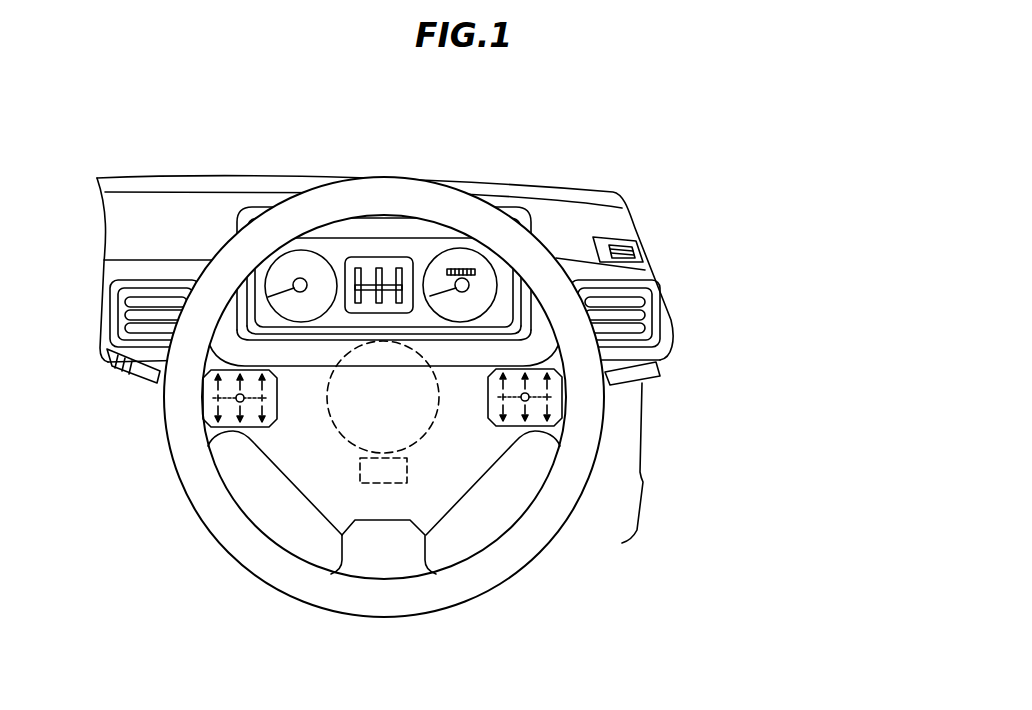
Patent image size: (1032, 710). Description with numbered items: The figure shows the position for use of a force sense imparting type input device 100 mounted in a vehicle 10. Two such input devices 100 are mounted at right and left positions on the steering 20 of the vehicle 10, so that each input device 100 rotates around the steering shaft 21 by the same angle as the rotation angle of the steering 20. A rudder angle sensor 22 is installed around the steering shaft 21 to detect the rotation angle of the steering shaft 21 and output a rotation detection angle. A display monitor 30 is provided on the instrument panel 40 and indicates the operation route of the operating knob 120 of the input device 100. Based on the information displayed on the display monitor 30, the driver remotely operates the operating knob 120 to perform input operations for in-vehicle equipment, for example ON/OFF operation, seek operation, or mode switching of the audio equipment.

The vehicle 10 is at (480, 409).
The steering 20 is at (487, 440).
The steering shaft 21 is at (408, 450).
The rudder angle sensor 22 is at (368, 484).
The display monitor 30 is at (338, 231).
The instrument panel 40 is at (449, 329).
The force sense imparting type input device 100 is at (487, 432).
The operating knob 120 is at (568, 427).